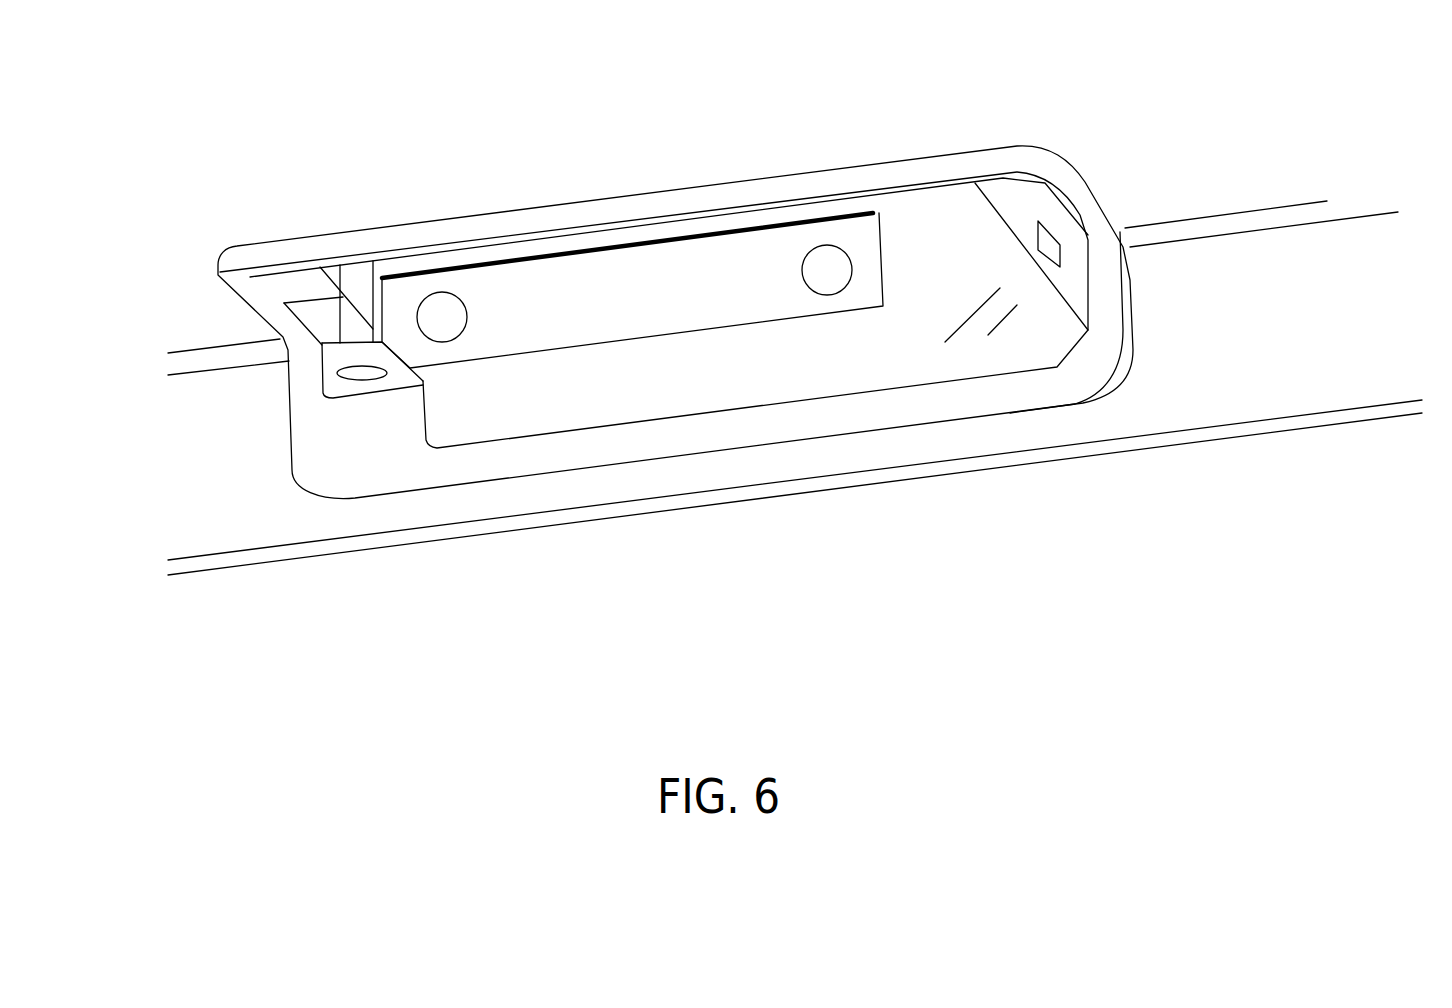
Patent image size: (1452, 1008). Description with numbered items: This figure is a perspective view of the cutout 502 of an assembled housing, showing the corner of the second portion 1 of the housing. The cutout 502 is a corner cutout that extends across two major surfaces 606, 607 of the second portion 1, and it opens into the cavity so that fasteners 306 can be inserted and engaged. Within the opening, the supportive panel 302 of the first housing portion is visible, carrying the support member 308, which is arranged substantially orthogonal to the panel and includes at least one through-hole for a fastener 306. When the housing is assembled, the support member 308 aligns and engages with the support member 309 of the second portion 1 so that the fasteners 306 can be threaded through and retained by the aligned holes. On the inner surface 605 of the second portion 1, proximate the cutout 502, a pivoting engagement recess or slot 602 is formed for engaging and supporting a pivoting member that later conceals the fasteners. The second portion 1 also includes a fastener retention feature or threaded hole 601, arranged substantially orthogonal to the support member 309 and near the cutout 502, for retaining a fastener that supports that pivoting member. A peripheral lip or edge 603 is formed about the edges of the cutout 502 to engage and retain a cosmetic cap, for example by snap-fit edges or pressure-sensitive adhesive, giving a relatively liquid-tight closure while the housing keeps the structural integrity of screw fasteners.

The second housing portion 1 is at (1160, 131).
The cutout 502 is at (652, 173).
The supportive panel 302 is at (856, 375).
The inner surface 605 is at (1022, 203).
The major surface 606 is at (1178, 206).
The major surface 607 is at (1193, 285).
The pivoting engagement recess or slot 602 is at (1030, 244).
The support member 309 is at (860, 205).
The support member 308 is at (863, 290).
The fastener 306 is at (817, 273).
The fastener retention feature or threaded hole 601 is at (386, 374).
The peripheral lip or edge 603 is at (406, 436).